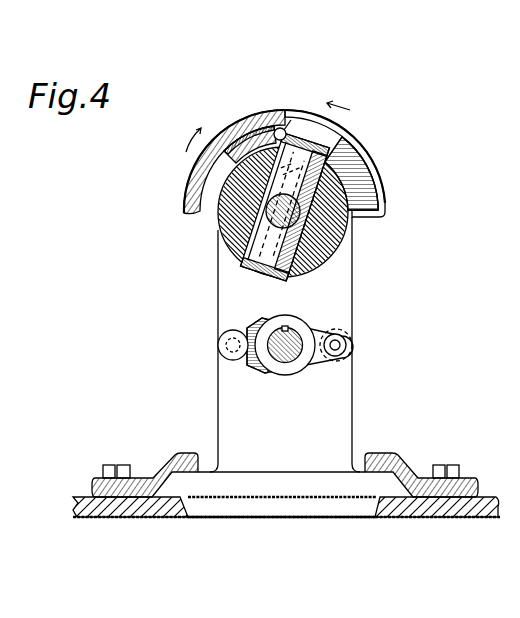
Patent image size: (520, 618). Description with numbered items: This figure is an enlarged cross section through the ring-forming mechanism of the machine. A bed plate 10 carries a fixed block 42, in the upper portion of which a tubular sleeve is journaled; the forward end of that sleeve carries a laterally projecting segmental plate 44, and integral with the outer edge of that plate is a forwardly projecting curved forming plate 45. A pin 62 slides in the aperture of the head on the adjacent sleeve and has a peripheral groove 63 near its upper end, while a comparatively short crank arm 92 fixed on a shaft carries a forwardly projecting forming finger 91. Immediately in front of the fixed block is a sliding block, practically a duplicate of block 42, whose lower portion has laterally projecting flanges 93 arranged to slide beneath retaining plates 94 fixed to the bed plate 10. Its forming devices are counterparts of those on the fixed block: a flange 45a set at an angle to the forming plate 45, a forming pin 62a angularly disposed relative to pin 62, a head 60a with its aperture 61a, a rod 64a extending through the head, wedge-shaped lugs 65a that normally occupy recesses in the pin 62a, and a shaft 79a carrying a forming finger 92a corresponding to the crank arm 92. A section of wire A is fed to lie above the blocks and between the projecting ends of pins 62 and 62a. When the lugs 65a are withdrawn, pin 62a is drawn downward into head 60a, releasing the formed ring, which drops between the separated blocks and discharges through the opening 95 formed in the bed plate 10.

The bed plate 10 is at (440, 510).
The opening 95 is at (302, 507).
The laterally projecting flanges 93 is at (185, 483).
The retaining plates 94 is at (160, 460).
The block 42 is at (230, 273).
The head 60a is at (285, 222).
The slide member 61a is at (262, 275).
The rod 64a is at (278, 216).
The wedge-shaped lugs 65a is at (306, 264).
The curved forming plate 45 is at (319, 161).
The peripheral groove 63 is at (356, 160).
The segmental plate 44 is at (368, 212).
The forming pin 62a is at (248, 136).
The pin 62 is at (296, 122).
The wire A is at (290, 127).
The flange 45a is at (223, 137).
The crank arm 92 is at (275, 339).
The forming finger 92a is at (300, 367).
The shaft 79a is at (293, 338).
The forming finger 91 is at (222, 347).